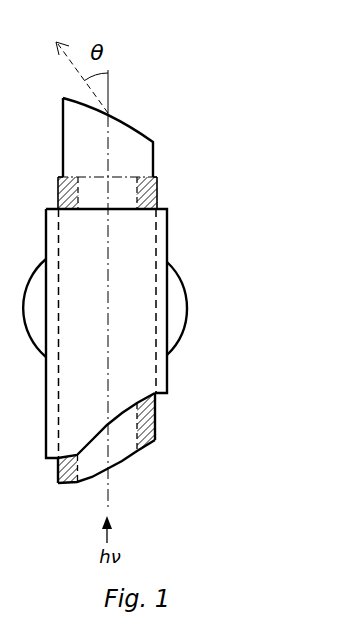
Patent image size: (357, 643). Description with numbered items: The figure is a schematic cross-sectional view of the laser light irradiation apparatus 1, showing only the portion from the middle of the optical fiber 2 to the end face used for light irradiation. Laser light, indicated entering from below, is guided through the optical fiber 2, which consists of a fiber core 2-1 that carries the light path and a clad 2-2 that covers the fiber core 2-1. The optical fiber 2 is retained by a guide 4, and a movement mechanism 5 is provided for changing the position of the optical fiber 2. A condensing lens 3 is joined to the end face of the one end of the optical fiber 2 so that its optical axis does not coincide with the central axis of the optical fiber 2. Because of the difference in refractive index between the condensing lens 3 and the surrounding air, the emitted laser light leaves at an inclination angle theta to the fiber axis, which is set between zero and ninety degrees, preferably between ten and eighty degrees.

The laser light irradiation apparatus 1 is at (185, 167).
The optical fiber 2 is at (185, 445).
The fiber core 2-1 is at (102, 457).
The clad 2-2 is at (150, 423).
The condensing lens 3 is at (142, 145).
The guide 4 is at (142, 235).
The movement mechanism 5 is at (172, 315).